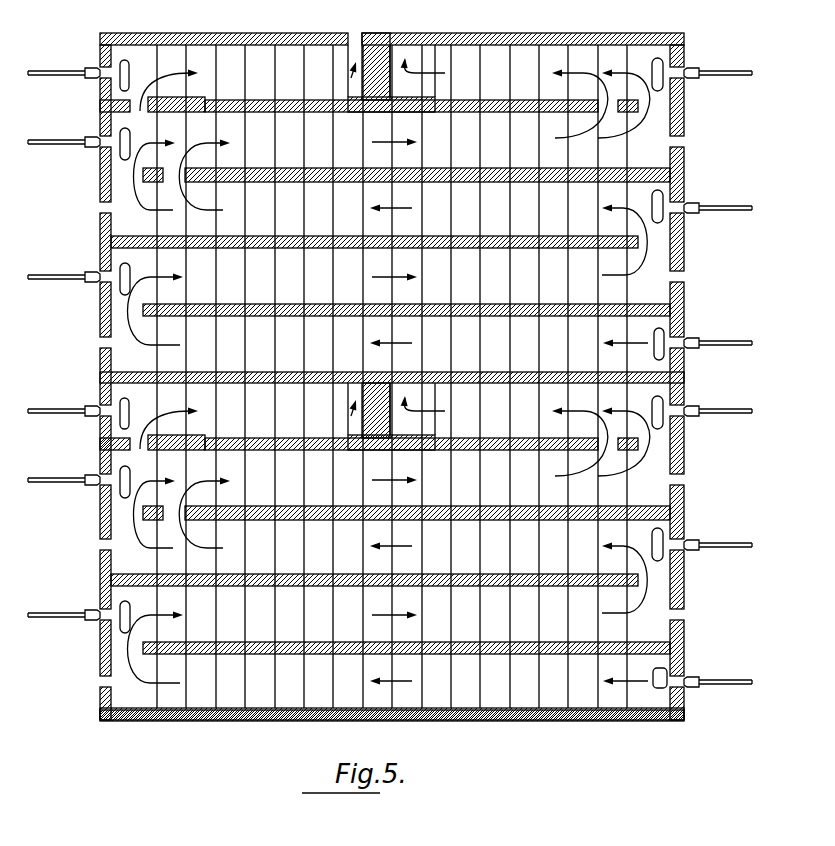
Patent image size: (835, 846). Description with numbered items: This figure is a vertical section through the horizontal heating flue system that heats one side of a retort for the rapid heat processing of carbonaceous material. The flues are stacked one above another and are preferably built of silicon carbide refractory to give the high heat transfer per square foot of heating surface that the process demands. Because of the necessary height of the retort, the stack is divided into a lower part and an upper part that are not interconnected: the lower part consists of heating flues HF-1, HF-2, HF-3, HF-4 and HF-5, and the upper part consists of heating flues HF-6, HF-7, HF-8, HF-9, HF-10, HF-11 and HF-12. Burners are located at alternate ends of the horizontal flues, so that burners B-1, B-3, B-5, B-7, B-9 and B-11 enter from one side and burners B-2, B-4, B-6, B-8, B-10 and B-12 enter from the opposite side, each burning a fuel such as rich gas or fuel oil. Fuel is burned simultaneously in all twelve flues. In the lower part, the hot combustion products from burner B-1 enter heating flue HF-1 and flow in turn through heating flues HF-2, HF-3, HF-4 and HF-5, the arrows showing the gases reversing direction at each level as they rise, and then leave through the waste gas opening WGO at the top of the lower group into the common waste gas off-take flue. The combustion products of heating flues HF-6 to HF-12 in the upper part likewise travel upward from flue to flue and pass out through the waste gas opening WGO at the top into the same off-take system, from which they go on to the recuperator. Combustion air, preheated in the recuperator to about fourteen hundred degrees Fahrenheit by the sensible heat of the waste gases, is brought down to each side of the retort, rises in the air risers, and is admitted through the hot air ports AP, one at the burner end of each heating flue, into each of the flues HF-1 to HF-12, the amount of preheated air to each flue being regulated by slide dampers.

The waste gas opening WGO is at (407, 50).
The hot air port AP is at (125, 60).
The heating flue HF-1 is at (509, 682).
The heating flue HF-2 is at (325, 644).
The heating flue HF-3 is at (508, 575).
The heating flue HF-4 is at (327, 508).
The heating flue HF-5 is at (565, 438).
The heating flue HF-6 is at (201, 425).
The heating flue HF-7 is at (509, 344).
The heating flue HF-8 is at (325, 306).
The heating flue HF-9 is at (508, 237).
The heating flue HF-10 is at (332, 170).
The heating flue HF-11 is at (565, 100).
The heating flue HF-12 is at (231, 87).
The burner B-1 is at (714, 682).
The burner B-2 is at (52, 613).
The burner B-3 is at (714, 545).
The burner B-4 is at (52, 478).
The burner B-5 is at (714, 411).
The burner B-6 is at (52, 409).
The burner B-7 is at (714, 343).
The burner B-8 is at (52, 275).
The burner B-9 is at (714, 208).
The burner B-10 is at (52, 140).
The burner B-11 is at (714, 73).
The burner B-12 is at (52, 71).